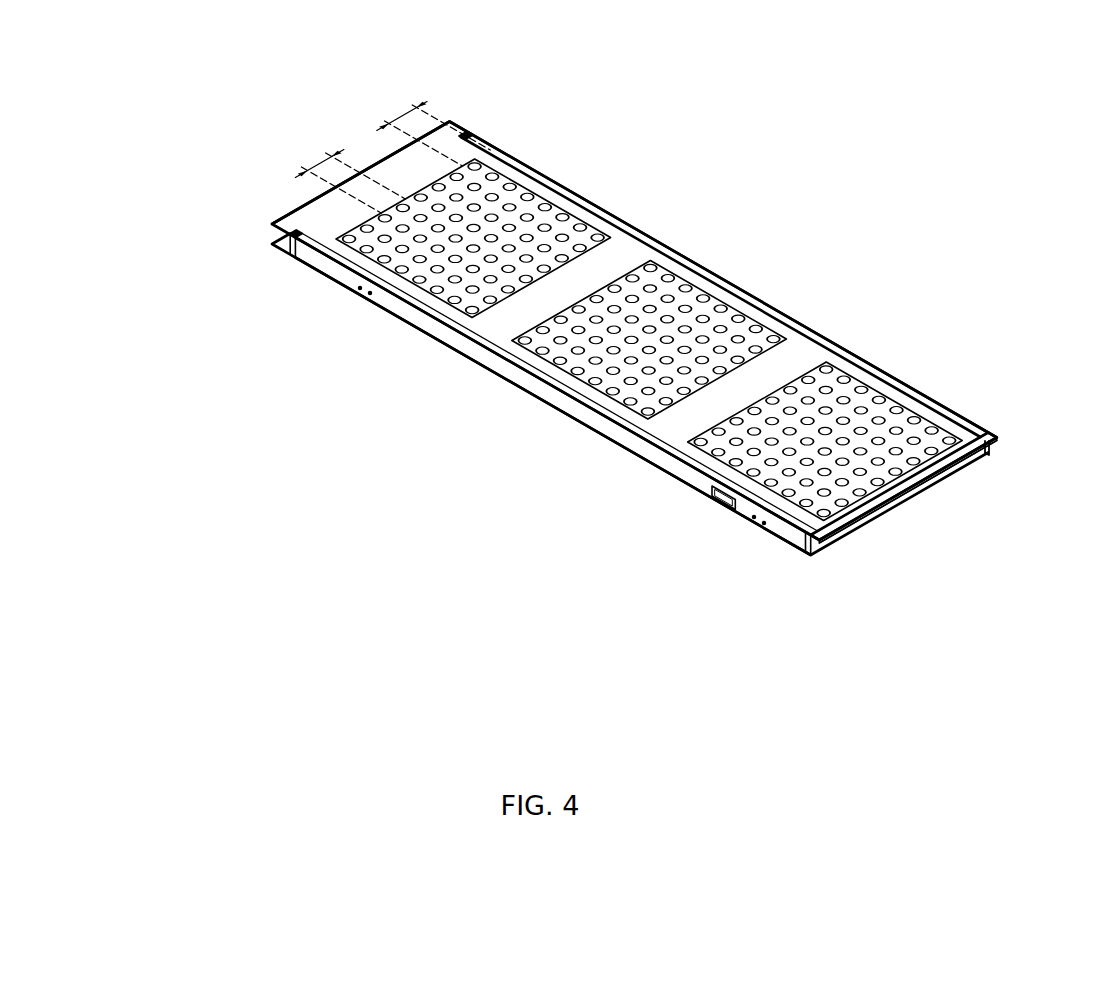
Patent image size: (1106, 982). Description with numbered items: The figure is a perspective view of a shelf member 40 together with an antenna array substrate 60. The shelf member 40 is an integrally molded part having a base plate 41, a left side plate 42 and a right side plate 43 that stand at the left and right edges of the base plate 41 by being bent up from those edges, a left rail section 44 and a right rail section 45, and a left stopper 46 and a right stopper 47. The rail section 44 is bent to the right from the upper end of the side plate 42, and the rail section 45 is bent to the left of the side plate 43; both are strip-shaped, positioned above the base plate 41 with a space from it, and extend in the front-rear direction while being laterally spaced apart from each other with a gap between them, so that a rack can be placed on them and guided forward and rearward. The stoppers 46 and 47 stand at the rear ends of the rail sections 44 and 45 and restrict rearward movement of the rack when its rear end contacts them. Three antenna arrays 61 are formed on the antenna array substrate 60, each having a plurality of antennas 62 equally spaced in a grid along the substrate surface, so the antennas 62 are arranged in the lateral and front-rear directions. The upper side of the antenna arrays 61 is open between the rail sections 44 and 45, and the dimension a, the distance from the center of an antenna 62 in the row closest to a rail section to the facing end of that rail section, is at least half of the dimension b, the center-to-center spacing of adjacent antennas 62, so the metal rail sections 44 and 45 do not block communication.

The shelf member 40 is at (800, 576).
The base plate 41 is at (897, 512).
The left side plate 42 is at (780, 530).
The right side plate 43 is at (990, 453).
The left rail section 44 is at (418, 306).
The right rail section 45 is at (580, 198).
The left stopper 46 is at (298, 233).
The right stopper 47 is at (466, 132).
The antenna array substrate 60 is at (385, 168).
The antenna array 61 is at (253, 305).
The antenna 62 is at (345, 250).